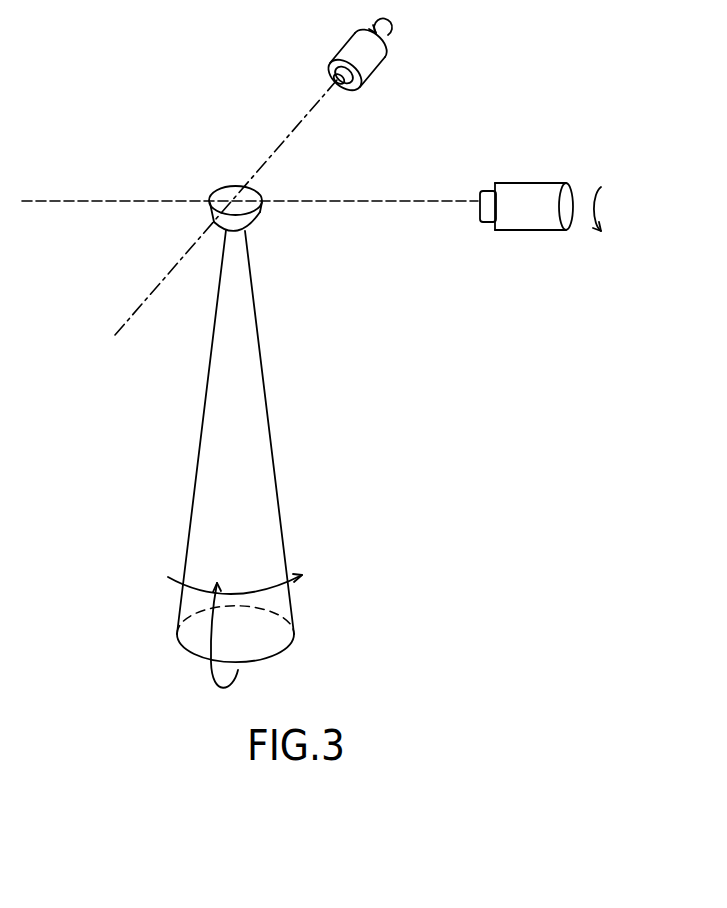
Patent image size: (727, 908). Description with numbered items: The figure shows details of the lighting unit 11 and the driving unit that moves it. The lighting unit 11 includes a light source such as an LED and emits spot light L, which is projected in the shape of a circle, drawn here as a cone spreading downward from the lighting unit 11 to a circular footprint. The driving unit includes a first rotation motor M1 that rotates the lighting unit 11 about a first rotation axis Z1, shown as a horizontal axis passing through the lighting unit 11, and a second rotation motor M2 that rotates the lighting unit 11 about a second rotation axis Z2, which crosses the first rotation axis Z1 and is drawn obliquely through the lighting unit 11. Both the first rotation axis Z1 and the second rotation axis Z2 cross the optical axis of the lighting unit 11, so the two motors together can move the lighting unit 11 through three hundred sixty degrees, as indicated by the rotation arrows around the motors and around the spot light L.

The lighting unit 11 is at (257, 189).
The first rotation motor M1 is at (535, 183).
The second rotation motor M2 is at (370, 76).
The first rotation axis Z1 is at (405, 206).
The second rotation axis Z2 is at (292, 132).
The spot light L is at (277, 655).